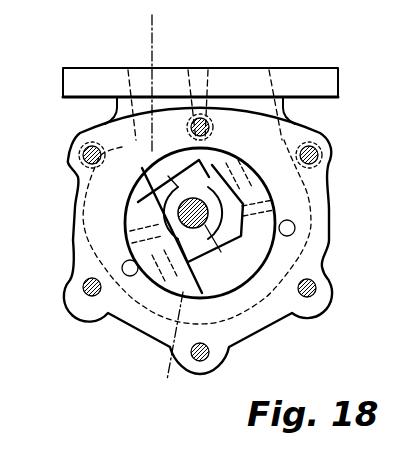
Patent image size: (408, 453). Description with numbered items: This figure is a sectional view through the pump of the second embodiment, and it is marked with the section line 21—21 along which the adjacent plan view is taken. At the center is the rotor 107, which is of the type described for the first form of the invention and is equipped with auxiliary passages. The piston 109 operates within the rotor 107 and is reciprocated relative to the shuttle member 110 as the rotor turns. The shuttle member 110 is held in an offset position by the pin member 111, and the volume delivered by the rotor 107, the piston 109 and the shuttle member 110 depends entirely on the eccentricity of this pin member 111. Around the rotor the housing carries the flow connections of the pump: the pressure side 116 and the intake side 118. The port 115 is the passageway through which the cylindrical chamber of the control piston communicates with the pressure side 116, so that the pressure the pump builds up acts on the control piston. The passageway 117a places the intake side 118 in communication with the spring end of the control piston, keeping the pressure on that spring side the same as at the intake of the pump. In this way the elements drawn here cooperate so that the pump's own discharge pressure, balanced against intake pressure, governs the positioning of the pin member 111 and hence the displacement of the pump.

The section line 21— 21 is at (172, 41).
The rotor 107 is at (262, 239).
The piston 109 is at (152, 184).
The shuttle member 110 is at (168, 210).
The pin member 111 is at (202, 200).
The port 115 is at (124, 276).
The pressure side 116 is at (125, 148).
The passageway 117a is at (294, 224).
The intake side 118 is at (272, 138).